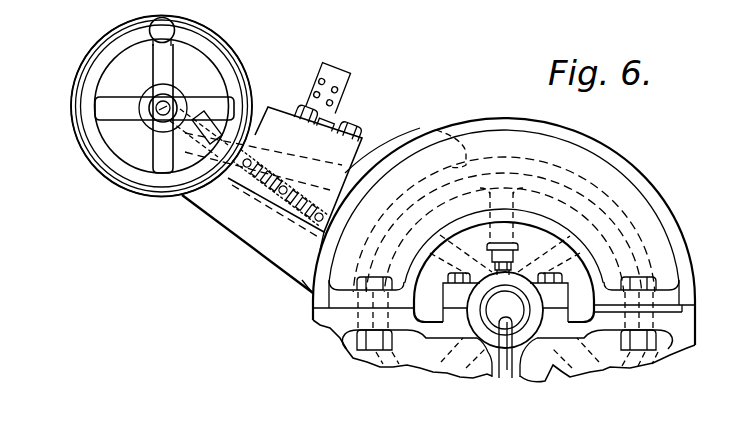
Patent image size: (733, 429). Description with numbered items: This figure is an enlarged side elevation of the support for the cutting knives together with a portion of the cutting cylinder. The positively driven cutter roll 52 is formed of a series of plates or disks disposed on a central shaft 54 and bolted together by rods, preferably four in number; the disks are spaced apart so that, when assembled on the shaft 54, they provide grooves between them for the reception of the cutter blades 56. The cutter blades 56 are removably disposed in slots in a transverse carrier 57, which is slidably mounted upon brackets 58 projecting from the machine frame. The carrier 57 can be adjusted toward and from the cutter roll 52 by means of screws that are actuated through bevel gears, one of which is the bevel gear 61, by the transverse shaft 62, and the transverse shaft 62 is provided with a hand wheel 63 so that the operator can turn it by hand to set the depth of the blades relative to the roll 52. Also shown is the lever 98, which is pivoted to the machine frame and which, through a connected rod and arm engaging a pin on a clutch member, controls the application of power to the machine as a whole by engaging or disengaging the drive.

The cutter roll 52 is at (523, 158).
The central shaft 54 is at (493, 313).
The cutter blades 56 is at (387, 122).
The transverse carrier 57 is at (270, 106).
The brackets 58 is at (258, 238).
The bevel gear 61 is at (152, 95).
The transverse shaft 62 is at (150, 113).
The hand wheel 63 is at (123, 176).
The lever 98 is at (503, 380).